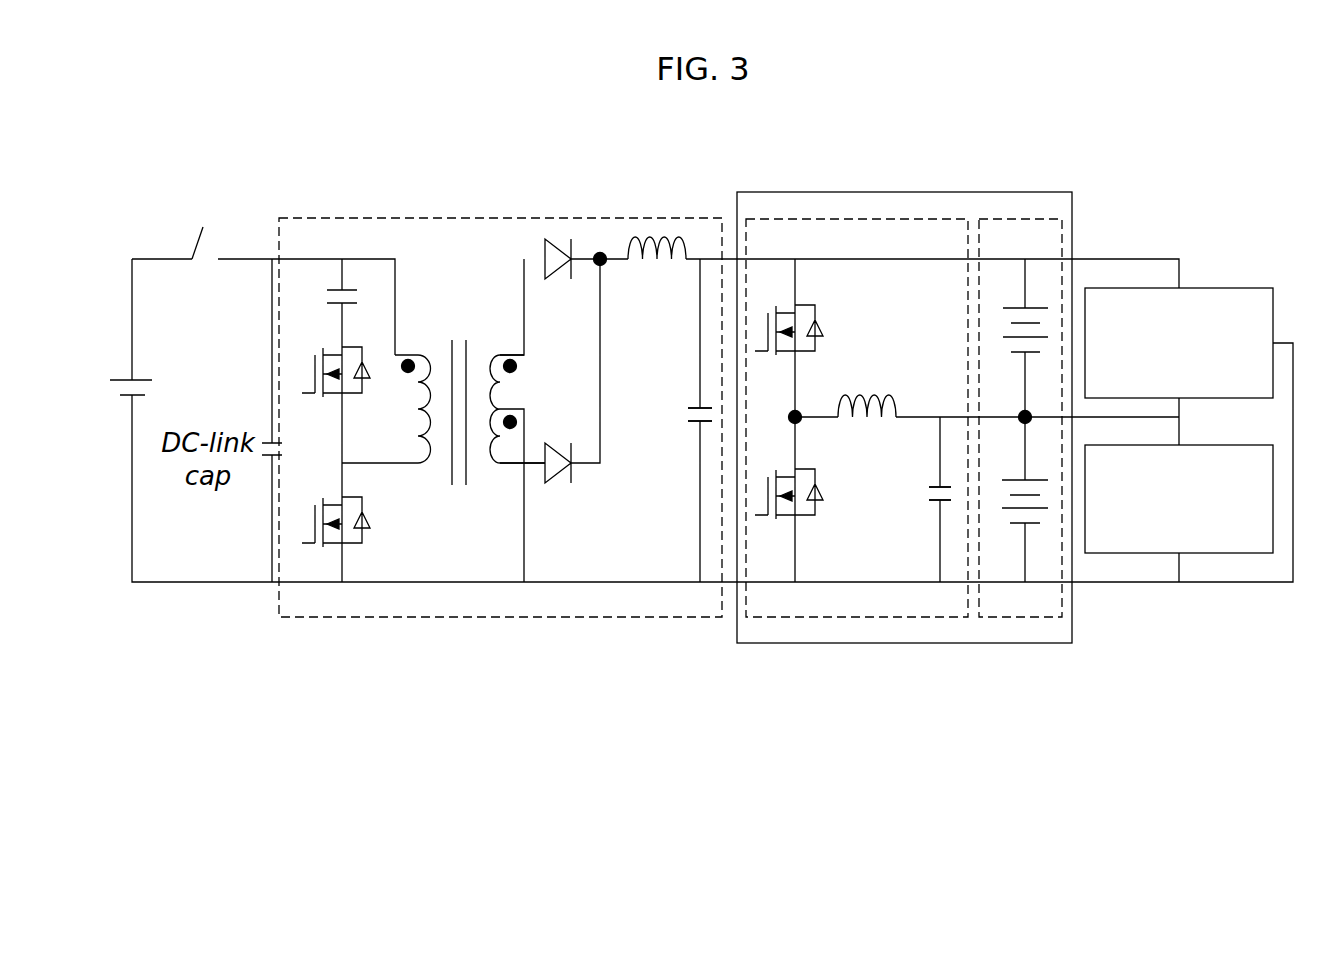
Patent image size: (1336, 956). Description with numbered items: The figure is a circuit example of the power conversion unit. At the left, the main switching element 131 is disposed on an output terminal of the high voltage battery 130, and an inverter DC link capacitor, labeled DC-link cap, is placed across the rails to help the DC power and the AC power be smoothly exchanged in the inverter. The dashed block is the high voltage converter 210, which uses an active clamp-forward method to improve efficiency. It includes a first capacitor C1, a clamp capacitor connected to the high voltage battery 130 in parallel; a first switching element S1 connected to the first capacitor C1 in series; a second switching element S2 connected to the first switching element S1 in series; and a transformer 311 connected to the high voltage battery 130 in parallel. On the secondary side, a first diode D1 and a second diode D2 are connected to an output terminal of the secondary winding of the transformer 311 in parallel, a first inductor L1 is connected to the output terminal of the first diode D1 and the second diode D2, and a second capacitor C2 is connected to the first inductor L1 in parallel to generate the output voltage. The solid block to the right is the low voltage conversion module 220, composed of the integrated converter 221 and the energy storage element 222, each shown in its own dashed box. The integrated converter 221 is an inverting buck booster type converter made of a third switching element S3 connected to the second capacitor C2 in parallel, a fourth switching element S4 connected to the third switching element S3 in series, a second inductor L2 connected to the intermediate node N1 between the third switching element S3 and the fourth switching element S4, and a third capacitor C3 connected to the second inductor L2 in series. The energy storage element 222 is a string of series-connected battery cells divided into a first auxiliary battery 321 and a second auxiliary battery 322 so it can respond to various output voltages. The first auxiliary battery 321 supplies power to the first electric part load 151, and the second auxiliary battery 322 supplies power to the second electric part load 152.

The high voltage battery 130 is at (143, 380).
The main switching element 131 is at (200, 233).
The high voltage converter 210 is at (508, 218).
The transformer 311 is at (468, 477).
The low voltage conversion module 220 is at (934, 192).
The integrated converter 221 is at (830, 219).
The energy storage element 222 is at (1030, 219).
The first auxiliary battery 321 is at (1032, 308).
The second auxiliary battery 322 is at (1013, 523).
The first electric part load 151 is at (1232, 287).
The second electric part load 152 is at (1210, 553).
The first capacitor C1 is at (352, 289).
The second capacitor C2 is at (697, 424).
The third capacitor C3 is at (937, 503).
The first switching element S1 is at (355, 347).
The second switching element S2 is at (362, 528).
The third switching element S3 is at (815, 307).
The fourth switching element S4 is at (815, 472).
The first diode D1 is at (573, 262).
The second diode D2 is at (573, 483).
The first inductor L1 is at (657, 238).
The second inductor L2 is at (890, 393).
The intermediate node N1 is at (798, 413).